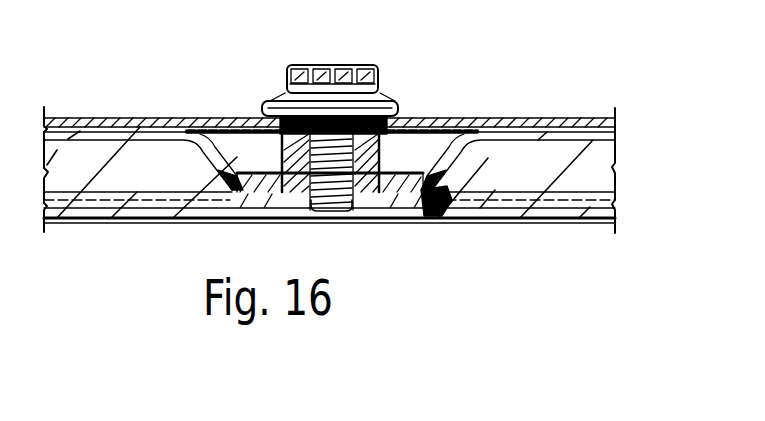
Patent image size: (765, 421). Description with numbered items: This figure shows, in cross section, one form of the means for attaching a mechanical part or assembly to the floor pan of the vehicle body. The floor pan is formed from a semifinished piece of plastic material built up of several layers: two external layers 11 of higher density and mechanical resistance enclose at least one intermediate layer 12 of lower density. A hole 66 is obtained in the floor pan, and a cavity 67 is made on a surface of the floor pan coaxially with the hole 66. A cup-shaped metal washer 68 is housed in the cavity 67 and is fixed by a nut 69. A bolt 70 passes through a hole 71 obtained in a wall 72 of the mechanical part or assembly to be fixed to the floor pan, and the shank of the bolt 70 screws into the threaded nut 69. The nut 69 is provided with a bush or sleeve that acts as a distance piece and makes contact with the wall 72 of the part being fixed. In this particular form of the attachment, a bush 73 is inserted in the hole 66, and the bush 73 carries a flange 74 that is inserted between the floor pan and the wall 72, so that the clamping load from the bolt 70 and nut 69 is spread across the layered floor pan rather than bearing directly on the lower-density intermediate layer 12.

The external layers 11 is at (618, 130).
The intermediate layer 12 is at (595, 167).
The hole 66 is at (382, 222).
The cavity 67 is at (222, 223).
The cup-shaped metal washer 68 is at (433, 223).
The nut 69 is at (302, 222).
The bolt 70 is at (330, 63).
The hole 71 is at (293, 84).
The wall 72 is at (150, 118).
The bush 73 is at (228, 118).
The flange 74 is at (203, 128).